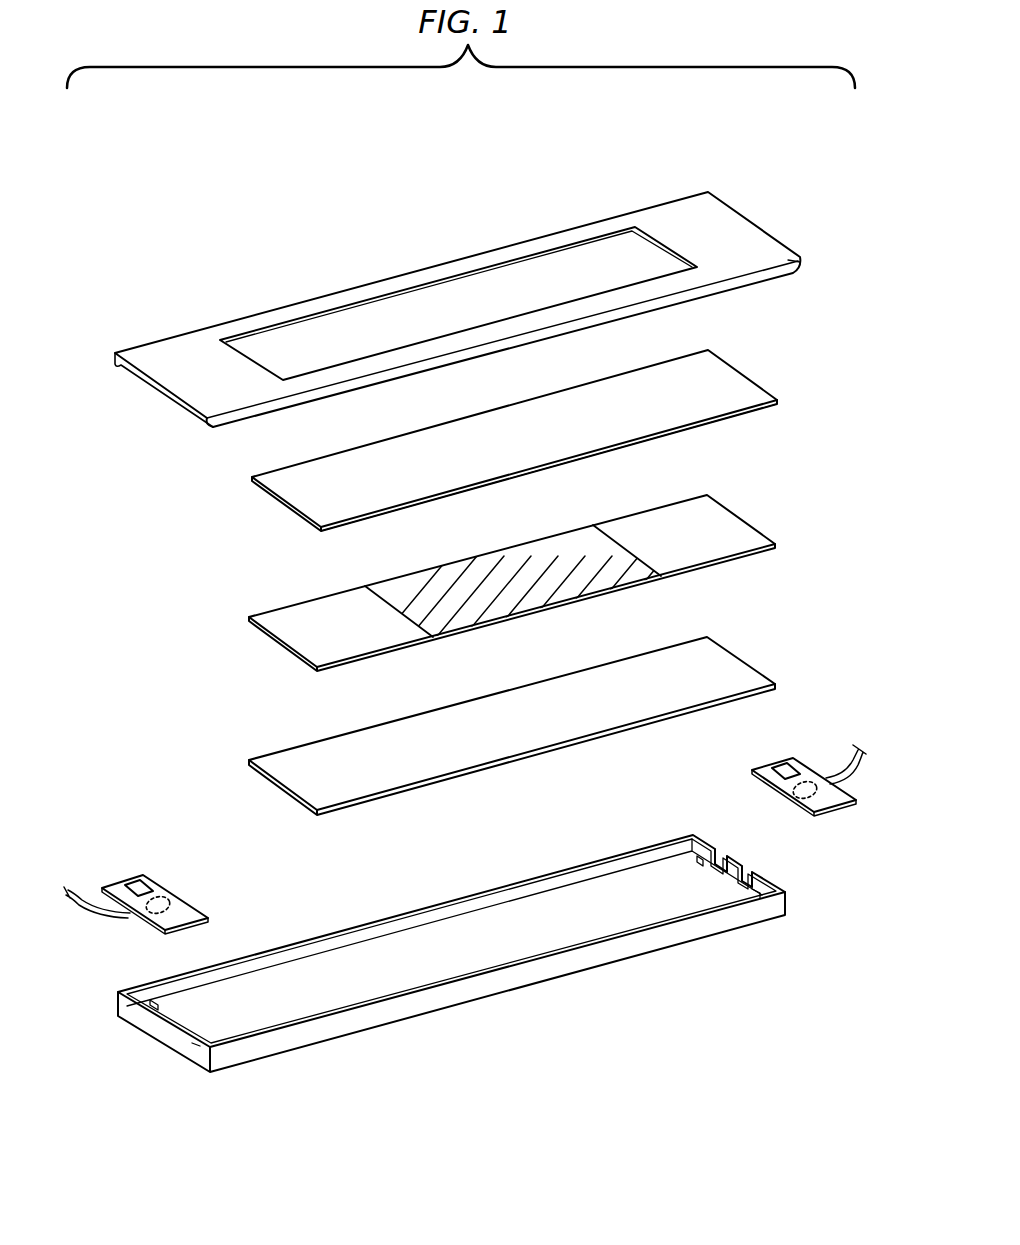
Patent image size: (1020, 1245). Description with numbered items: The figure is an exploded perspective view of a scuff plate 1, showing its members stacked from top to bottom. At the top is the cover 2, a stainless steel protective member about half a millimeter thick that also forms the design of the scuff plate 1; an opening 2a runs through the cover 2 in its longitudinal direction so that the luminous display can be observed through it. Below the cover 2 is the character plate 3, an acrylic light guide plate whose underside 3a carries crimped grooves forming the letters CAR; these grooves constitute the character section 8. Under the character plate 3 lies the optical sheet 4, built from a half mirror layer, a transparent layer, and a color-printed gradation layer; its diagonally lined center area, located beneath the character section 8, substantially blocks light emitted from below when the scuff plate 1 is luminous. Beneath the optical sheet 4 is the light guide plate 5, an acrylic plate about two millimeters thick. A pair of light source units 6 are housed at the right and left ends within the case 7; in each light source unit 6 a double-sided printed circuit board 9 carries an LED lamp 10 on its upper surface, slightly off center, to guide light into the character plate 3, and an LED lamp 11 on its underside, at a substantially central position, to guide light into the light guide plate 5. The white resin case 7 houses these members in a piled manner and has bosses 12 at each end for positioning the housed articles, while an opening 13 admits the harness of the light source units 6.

The scuff plate 1 is at (764, 170).
The cover 2 is at (457, 296).
The opening 2a is at (458, 276).
The character plate 3 is at (522, 434).
The underside 3a is at (739, 427).
The optical sheet 4 is at (725, 516).
The light guide plate 5 is at (728, 661).
The light source unit 6 is at (152, 893).
The case 7 is at (466, 937).
The character section 8 is at (425, 440).
The double-sided printed circuit board 9 is at (160, 929).
The LED lamp 10 is at (137, 883).
The LED lamp 11 is at (172, 905).
The boss 12 is at (157, 1003).
The opening 13 is at (726, 856).